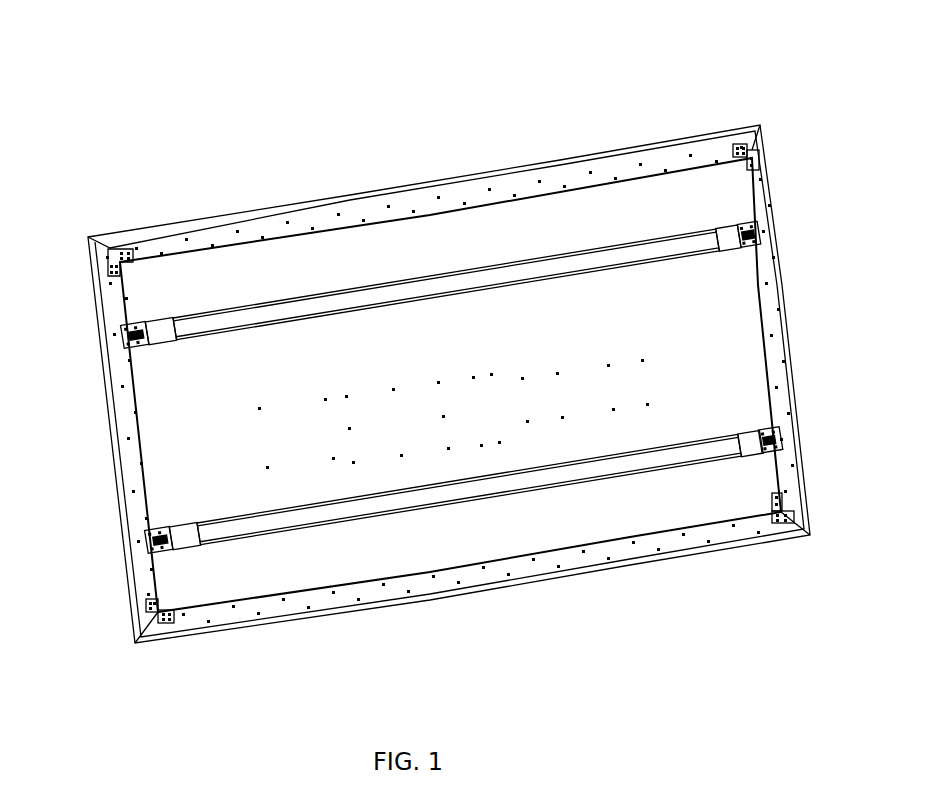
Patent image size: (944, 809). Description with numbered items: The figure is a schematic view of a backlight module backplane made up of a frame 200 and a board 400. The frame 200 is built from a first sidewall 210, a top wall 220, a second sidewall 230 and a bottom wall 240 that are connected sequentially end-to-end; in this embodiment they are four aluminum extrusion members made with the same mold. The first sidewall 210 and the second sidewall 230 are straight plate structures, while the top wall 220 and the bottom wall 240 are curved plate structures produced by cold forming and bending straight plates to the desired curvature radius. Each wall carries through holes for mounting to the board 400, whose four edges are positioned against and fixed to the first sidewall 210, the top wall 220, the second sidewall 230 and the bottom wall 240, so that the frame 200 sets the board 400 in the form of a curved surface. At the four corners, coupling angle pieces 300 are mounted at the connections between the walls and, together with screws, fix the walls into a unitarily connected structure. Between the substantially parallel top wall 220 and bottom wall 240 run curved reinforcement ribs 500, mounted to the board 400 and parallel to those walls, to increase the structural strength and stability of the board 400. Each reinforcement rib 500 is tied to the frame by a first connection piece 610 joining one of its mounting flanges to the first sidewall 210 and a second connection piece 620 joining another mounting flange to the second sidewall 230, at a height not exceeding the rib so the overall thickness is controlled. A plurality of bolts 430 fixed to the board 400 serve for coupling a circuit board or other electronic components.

The frame 200 is at (158, 75).
The first sidewall 210 is at (123, 293).
The top wall 220 is at (218, 235).
The second sidewall 230 is at (752, 192).
The bottom wall 240 is at (303, 605).
The coupling angle piece 300 is at (110, 247).
The board 400 is at (411, 540).
The bolts 430 is at (649, 405).
The reinforcement rib 500 is at (667, 467).
The first connection piece 610 is at (130, 325).
The second connection piece 620 is at (757, 224).